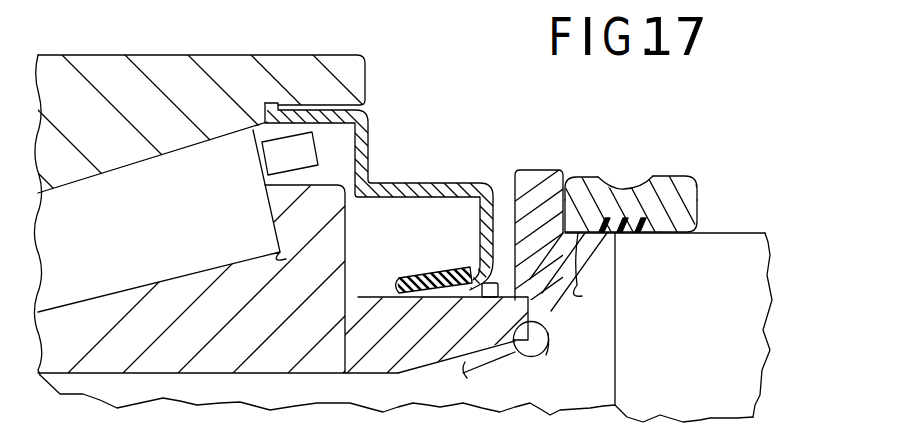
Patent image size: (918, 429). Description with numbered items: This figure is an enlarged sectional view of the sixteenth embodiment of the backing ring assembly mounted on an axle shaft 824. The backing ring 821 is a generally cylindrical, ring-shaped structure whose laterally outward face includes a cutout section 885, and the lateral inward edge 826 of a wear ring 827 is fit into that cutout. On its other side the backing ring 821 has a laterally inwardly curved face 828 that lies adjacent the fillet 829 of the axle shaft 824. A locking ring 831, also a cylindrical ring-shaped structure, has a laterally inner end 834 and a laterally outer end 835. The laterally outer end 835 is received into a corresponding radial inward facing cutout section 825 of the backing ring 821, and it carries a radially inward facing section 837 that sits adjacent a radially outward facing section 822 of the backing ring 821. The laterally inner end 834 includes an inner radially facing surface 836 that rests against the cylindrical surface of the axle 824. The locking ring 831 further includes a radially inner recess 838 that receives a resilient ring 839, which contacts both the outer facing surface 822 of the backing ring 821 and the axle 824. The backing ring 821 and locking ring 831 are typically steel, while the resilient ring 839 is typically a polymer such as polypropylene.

The backing ring 821 is at (532, 162).
The radially outward facing section 822 is at (583, 233).
The axle shaft 824 is at (722, 233).
The radial inward facing cutout section 825 is at (572, 177).
The lateral inward edge 826 is at (546, 356).
The wear ring 827 is at (465, 378).
The laterally inwardly curved face 828 is at (562, 326).
The fillet 829 is at (577, 236).
The locking ring 831 is at (691, 174).
The laterally inner end 834 is at (697, 206).
The laterally outer end 835 is at (578, 233).
The inner radially facing surface 836 is at (665, 235).
The radially inward facing section 837 is at (602, 236).
The radially inner recess 838 is at (620, 236).
The resilient ring 839 is at (641, 235).
The cutout section 885 is at (513, 360).